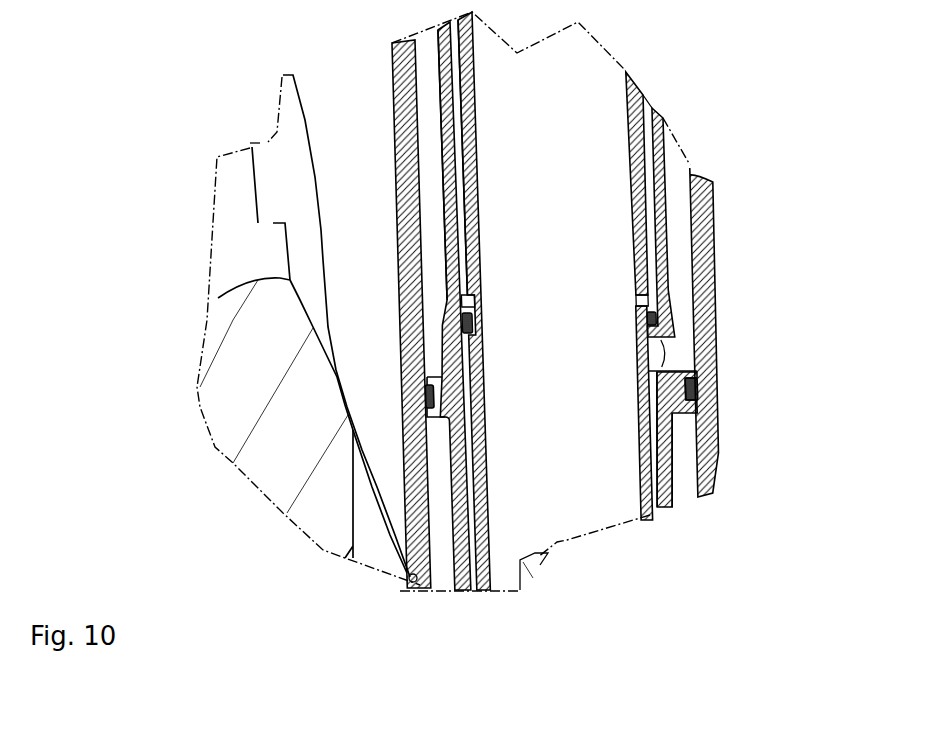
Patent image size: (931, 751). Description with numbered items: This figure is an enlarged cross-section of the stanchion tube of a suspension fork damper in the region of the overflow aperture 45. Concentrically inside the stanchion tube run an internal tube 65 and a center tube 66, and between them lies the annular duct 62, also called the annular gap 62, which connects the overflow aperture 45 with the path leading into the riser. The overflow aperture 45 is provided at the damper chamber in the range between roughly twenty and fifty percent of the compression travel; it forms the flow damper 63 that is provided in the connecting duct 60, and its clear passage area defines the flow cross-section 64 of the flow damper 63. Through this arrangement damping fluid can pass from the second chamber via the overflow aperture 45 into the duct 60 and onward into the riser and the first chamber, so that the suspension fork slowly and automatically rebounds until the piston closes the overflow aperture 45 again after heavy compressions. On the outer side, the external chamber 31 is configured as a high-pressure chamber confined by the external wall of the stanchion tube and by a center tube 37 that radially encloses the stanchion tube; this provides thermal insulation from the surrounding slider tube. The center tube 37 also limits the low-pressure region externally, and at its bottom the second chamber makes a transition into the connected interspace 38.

The external chamber 31 is at (680, 268).
The center tube 37 is at (667, 450).
The interspace 38 is at (657, 515).
The overflow aperture 45 is at (640, 300).
The connecting duct 60 is at (458, 138).
The annular duct 62 is at (457, 190).
The flow damper 63 is at (463, 297).
The flow cross-section 64 is at (478, 302).
The internal tube 65 is at (467, 89).
The center tube 66 is at (445, 72).